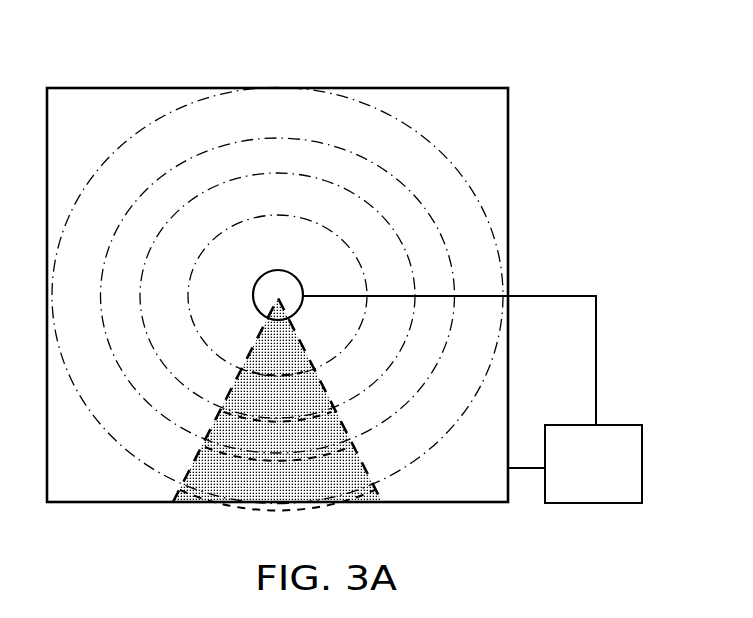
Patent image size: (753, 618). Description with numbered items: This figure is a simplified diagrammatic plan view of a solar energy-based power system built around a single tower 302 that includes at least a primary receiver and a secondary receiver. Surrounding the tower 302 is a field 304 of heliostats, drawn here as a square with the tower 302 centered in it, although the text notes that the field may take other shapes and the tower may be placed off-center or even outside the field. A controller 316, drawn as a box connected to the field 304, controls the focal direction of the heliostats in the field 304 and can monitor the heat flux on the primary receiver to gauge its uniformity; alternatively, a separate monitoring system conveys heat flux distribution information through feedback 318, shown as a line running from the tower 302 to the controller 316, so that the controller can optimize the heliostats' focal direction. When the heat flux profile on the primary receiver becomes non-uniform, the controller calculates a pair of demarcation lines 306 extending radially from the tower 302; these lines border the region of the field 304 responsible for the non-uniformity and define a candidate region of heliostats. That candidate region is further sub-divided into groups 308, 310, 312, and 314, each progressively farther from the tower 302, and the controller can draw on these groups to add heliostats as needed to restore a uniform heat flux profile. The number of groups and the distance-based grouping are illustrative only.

The tower 302 is at (253, 280).
The field of heliostats 304 is at (277, 258).
The demarcation lines 306 is at (210, 431).
The group of heliostats 308 is at (258, 362).
The group of heliostats 310 is at (258, 409).
The group of heliostats 312 is at (258, 451).
The group of heliostats 314 is at (258, 496).
The controller 316 is at (600, 426).
The feedback 318 is at (455, 324).